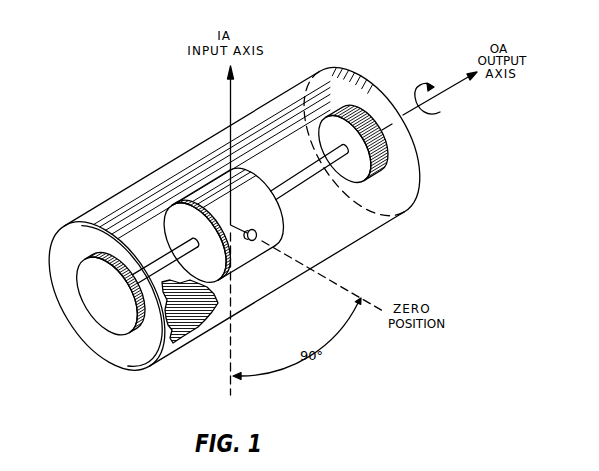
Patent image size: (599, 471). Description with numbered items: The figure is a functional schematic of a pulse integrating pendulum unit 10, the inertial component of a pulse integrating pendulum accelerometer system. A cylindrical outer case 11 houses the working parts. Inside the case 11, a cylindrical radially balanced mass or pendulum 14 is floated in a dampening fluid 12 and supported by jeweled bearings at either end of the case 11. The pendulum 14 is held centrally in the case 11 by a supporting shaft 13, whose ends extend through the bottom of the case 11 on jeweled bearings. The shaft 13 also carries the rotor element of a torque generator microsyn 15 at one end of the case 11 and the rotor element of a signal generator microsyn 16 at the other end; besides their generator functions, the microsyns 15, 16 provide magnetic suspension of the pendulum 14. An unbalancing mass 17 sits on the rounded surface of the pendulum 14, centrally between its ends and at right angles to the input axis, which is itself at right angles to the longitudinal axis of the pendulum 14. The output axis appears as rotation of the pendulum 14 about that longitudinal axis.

The pulse integrating pendulum unit 10 is at (163, 127).
The cylindrical outer case 11 is at (93, 348).
The dampening fluid 12 is at (183, 318).
The supporting shaft 13 is at (167, 257).
The pendulum 14 is at (187, 212).
The torque generator microsyn 15 is at (77, 283).
The signal generator microsyn 16 is at (352, 104).
The unbalancing mass 17 is at (258, 234).